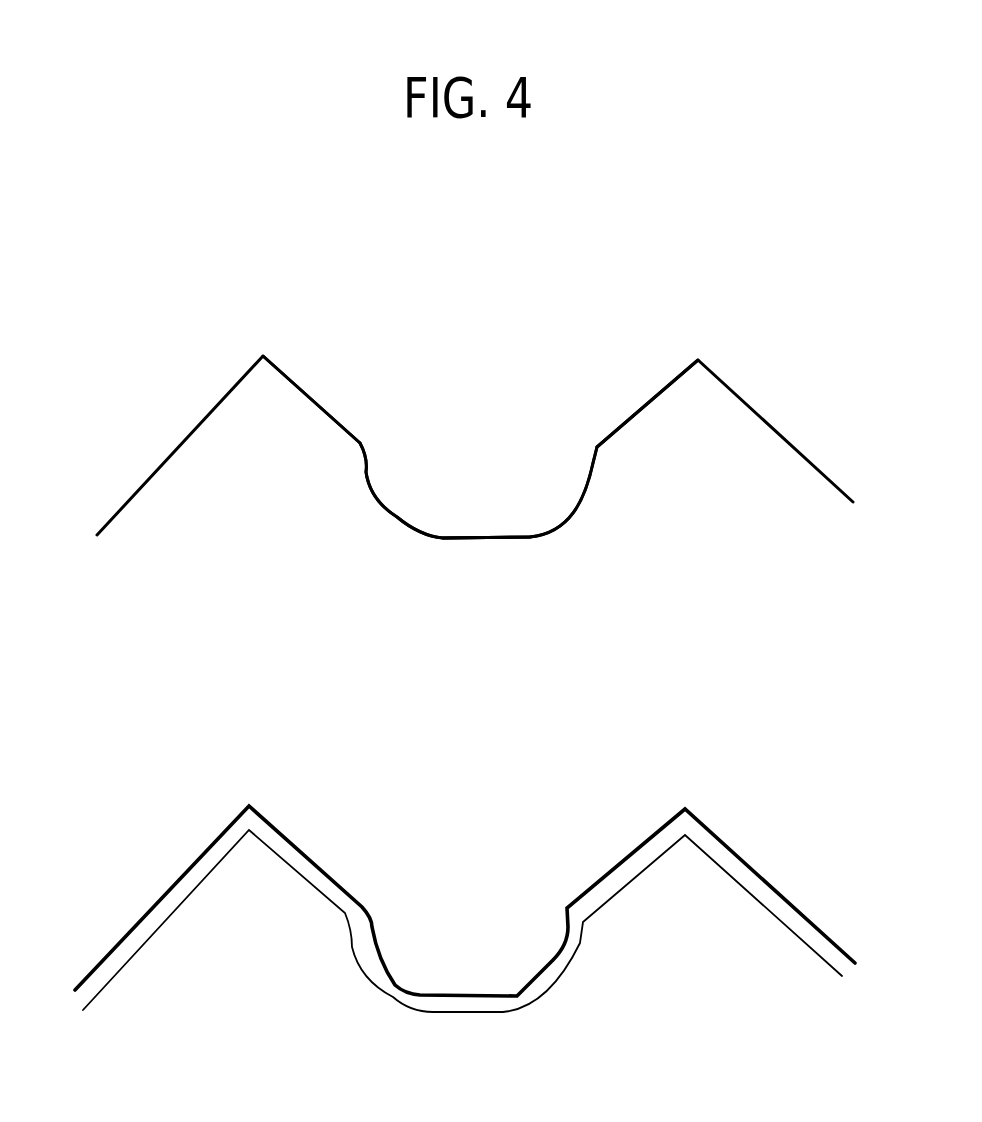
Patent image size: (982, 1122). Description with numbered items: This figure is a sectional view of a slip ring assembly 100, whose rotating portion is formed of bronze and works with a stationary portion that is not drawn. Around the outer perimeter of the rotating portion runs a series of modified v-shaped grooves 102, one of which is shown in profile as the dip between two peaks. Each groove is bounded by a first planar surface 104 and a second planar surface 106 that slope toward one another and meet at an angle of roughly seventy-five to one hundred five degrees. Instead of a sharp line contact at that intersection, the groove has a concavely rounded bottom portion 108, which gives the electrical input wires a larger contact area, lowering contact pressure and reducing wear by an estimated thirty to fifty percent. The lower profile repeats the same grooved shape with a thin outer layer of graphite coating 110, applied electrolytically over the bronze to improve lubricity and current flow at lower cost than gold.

The slip ring assembly 100 is at (196, 366).
The modified v-shaped grooves 102 is at (352, 290).
The first planar surface 104 is at (323, 407).
The second planar surface 106 is at (637, 413).
The concavely rounded bottom portion 108 is at (473, 537).
The graphite coating 110 is at (188, 865).